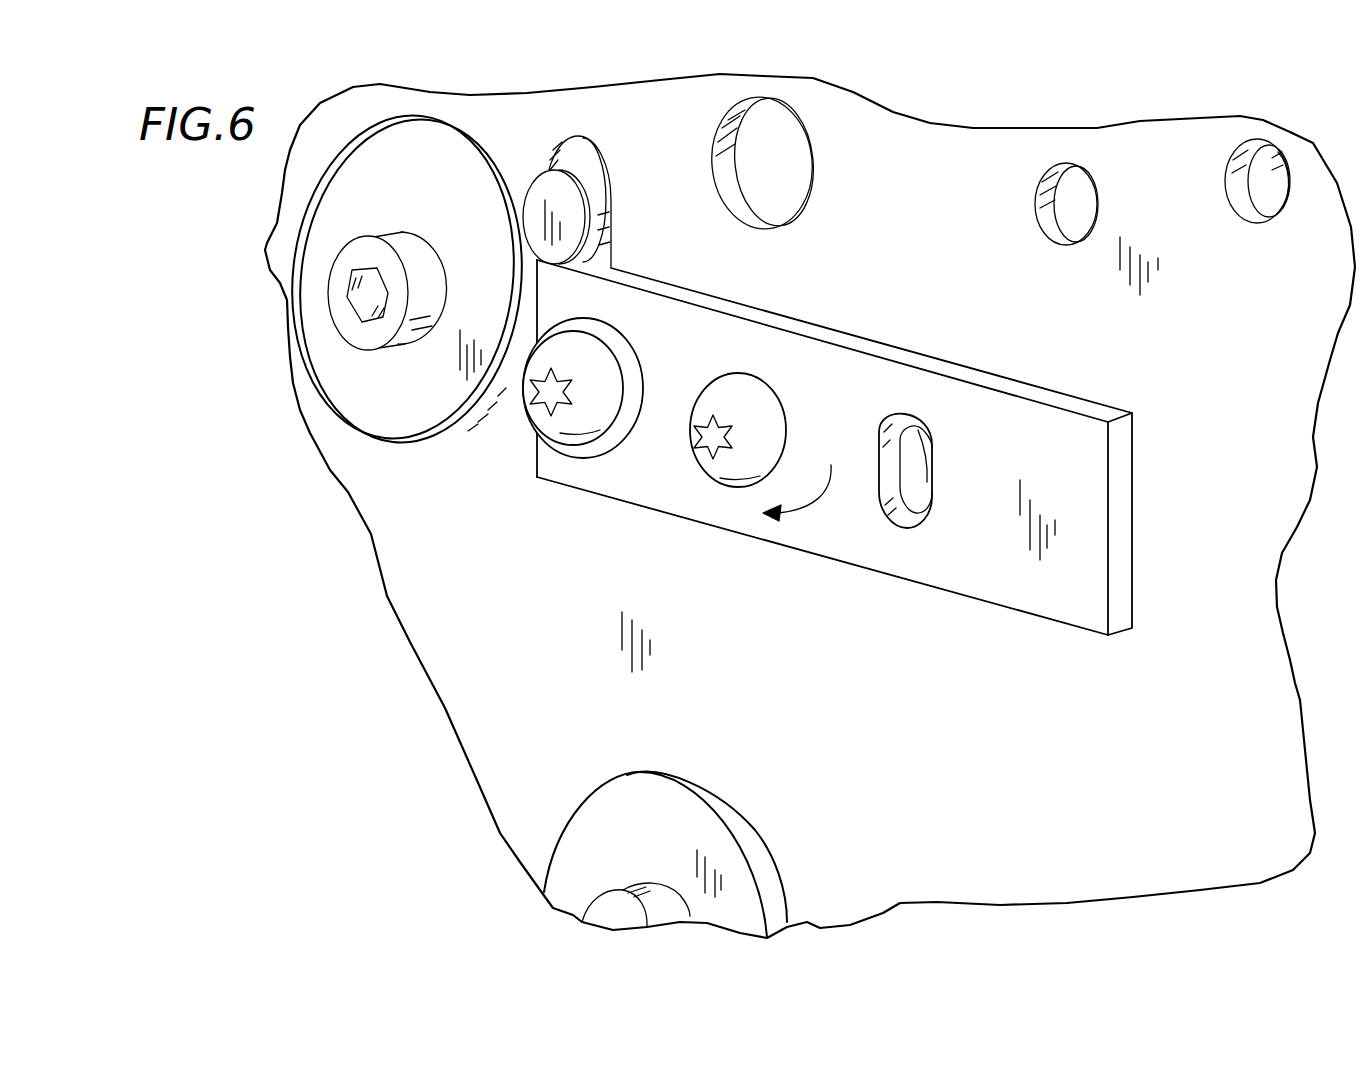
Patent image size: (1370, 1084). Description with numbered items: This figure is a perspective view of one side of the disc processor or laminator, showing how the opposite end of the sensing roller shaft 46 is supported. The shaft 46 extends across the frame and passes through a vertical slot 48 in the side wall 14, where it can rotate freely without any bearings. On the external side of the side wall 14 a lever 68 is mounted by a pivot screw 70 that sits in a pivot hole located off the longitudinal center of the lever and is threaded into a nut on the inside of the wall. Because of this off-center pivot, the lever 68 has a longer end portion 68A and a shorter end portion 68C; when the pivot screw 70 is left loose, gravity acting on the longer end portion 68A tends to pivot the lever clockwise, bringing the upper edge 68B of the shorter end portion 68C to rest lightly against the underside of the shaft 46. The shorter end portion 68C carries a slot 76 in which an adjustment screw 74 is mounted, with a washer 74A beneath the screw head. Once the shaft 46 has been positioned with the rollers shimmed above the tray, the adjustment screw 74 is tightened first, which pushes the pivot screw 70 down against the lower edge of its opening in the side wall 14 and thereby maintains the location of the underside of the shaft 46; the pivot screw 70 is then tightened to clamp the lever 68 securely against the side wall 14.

The side wall 14 is at (1260, 678).
The shaft 46 is at (595, 192).
The slot 48 is at (580, 148).
The lever 68 is at (548, 452).
The end portion 68A is at (1070, 442).
The upper edge 68B is at (600, 258).
The end portion 68C is at (562, 468).
The pivot screw 70 is at (763, 433).
The adjustment screw 74 is at (593, 353).
The washer 74A is at (617, 440).
The slot 76 is at (912, 520).